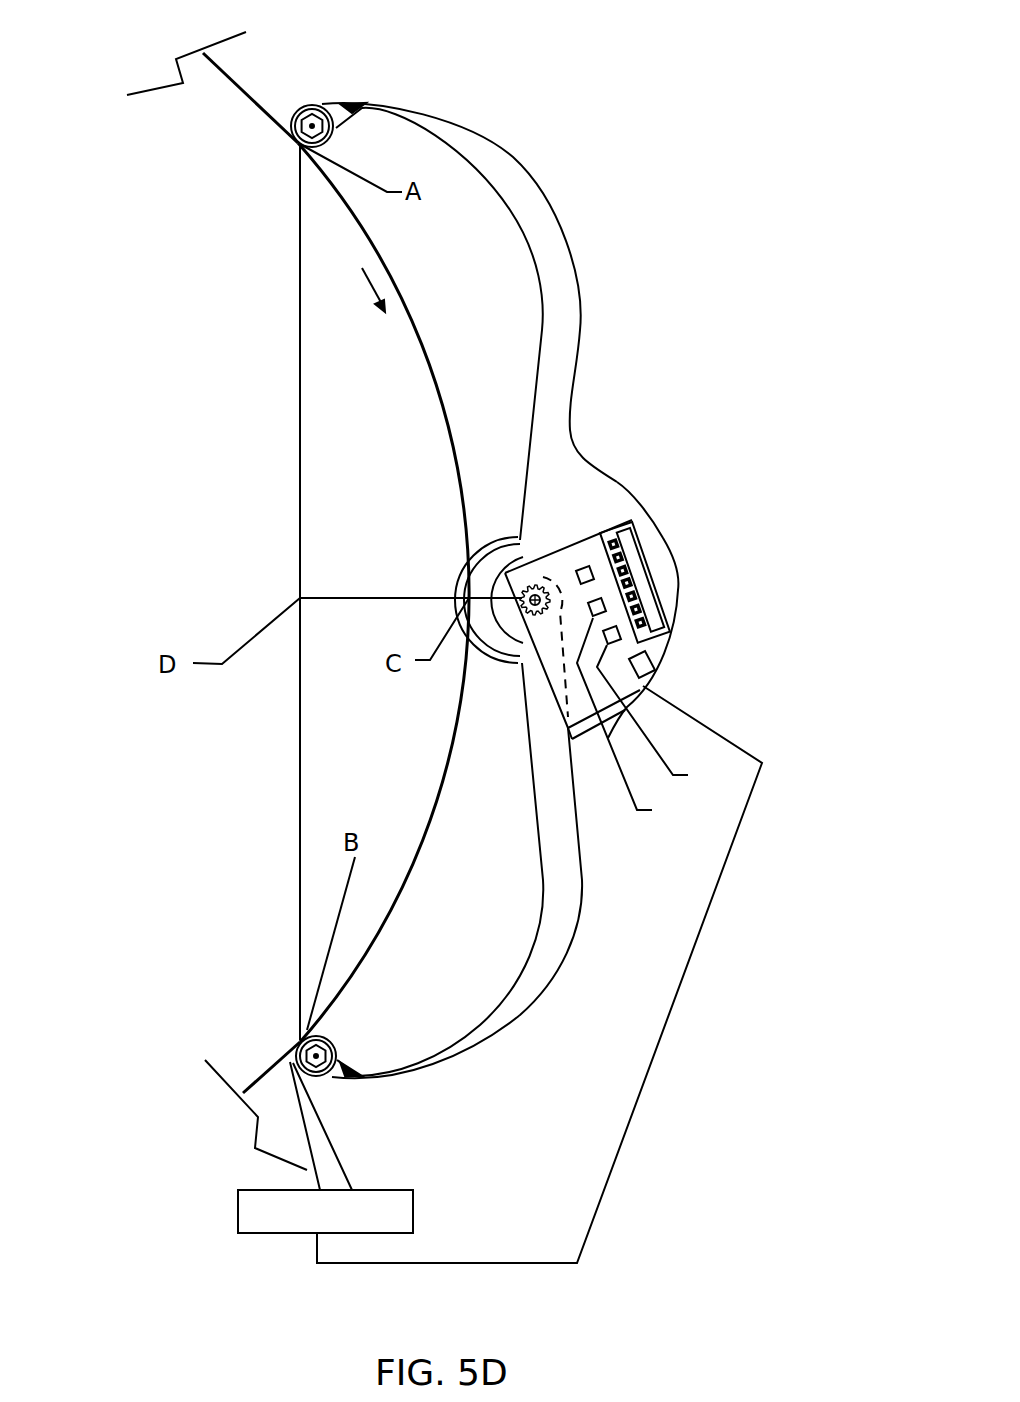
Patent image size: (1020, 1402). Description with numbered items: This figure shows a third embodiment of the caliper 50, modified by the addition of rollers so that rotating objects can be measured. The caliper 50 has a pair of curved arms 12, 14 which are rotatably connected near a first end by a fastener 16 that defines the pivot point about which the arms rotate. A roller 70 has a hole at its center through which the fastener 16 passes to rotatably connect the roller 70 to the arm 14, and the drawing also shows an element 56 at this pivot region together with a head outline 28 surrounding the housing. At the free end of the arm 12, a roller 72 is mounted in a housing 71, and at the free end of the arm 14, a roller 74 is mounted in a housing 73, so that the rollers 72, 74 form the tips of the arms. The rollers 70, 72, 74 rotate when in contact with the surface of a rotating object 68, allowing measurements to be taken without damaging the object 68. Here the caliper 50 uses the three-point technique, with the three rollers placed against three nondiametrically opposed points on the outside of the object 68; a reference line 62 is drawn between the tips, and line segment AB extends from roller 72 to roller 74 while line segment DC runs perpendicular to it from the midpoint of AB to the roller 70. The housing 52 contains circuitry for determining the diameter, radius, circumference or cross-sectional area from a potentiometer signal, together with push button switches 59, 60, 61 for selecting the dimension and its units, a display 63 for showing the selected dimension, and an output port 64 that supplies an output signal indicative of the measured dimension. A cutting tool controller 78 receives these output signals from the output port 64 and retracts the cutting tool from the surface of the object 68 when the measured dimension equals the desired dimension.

The curved arm 12 is at (547, 217).
The curved arm 14 is at (577, 925).
The fastener 16 is at (518, 538).
The scanning head housing 28 is at (678, 593).
The caliper 50 is at (710, 635).
The housing 52 is at (580, 735).
The drive gear 56 is at (520, 655).
The push button switch 59 is at (592, 567).
The push button switch 60 is at (633, 721).
The push button switch 61 is at (661, 717).
The reference axis 62 is at (300, 433).
The display 63 is at (640, 572).
The output port 64 is at (380, 597).
The object 68 is at (427, 345).
The roller 70 is at (467, 537).
The housing 71 is at (337, 102).
The roller 72 is at (298, 143).
The housing 73 is at (350, 1067).
The roller 74 is at (300, 1040).
The cutting tool controller 78 is at (268, 1235).